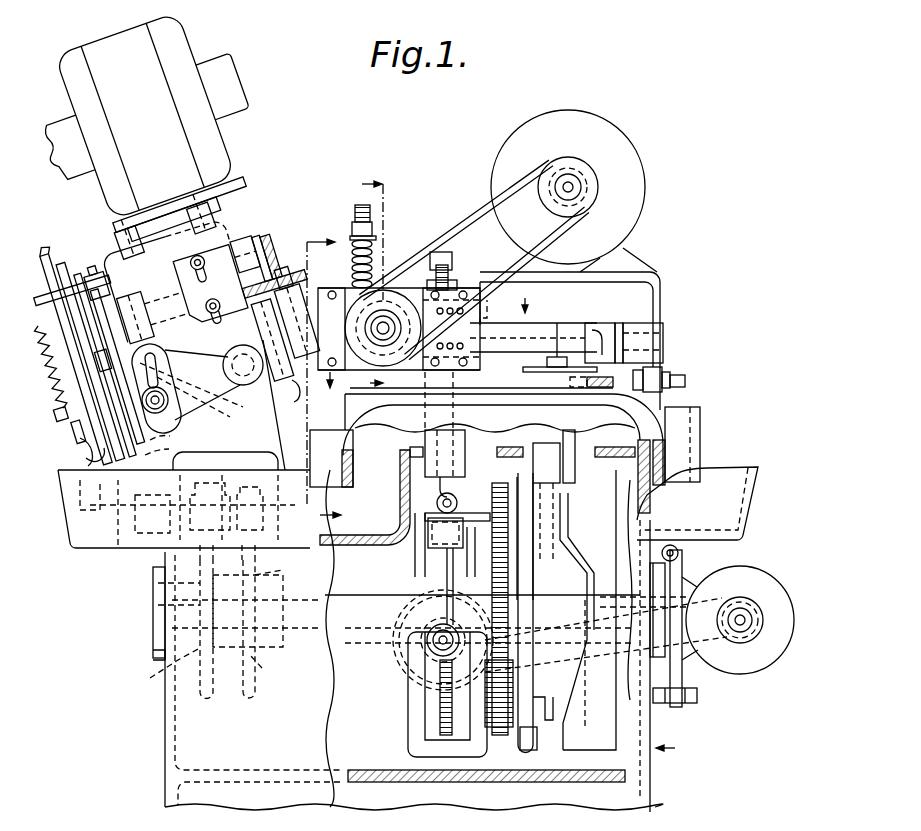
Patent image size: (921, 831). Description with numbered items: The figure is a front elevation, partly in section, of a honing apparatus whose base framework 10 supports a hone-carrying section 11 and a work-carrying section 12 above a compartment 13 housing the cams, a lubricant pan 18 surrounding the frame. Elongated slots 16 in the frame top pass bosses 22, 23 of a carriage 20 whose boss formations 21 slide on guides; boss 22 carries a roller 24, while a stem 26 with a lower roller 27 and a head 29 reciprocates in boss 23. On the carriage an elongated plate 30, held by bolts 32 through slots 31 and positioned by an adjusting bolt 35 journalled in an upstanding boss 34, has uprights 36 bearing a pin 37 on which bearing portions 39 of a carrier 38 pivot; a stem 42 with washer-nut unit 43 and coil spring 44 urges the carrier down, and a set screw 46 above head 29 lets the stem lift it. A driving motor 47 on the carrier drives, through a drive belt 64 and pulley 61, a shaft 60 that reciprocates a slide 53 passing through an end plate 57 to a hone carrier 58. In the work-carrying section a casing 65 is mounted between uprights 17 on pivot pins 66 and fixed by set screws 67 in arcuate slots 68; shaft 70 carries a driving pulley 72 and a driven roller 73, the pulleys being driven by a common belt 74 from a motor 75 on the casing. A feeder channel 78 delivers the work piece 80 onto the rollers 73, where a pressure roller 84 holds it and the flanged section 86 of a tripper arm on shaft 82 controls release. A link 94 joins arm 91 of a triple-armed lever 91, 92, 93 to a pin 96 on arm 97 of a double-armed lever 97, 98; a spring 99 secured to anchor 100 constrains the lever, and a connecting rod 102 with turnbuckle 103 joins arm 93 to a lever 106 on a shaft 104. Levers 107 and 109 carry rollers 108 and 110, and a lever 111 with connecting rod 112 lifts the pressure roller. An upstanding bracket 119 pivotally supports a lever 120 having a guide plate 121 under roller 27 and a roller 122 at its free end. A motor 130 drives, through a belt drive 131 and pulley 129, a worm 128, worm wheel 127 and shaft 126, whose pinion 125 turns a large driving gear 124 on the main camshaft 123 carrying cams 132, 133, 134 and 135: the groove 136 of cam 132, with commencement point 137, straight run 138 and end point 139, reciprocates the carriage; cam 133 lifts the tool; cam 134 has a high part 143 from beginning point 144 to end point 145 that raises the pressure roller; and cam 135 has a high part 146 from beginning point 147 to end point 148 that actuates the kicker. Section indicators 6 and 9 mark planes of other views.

The motor 75 is at (143, 116).
The work-carrying section 12 is at (220, 232).
The shaft 82 is at (138, 270).
The casing 65 is at (179, 294).
The flanged section 86 is at (226, 274).
The pressure roller 84 is at (238, 240).
The channel formation 78 is at (260, 246).
The work piece 80 is at (268, 262).
The tool or hone carrier 58 is at (291, 320).
The driven roller 73 is at (290, 396).
The shaft 70 is at (238, 404).
The common belt 74 is at (58, 248).
The arm 97 is at (74, 316).
The pin 96 is at (90, 334).
The link 94 is at (96, 350).
The spring 99 is at (92, 366).
The arm 98 is at (92, 274).
The anchor 100 is at (44, 284).
The arm 91 is at (56, 382).
The arm 92 is at (60, 414).
The arm 93 is at (74, 428).
The turnbuckle 103 is at (80, 445).
The lever 106 is at (86, 460).
The arcuate slots 68 is at (160, 354).
The set screws 67 is at (167, 406).
The pivot pins 66 is at (232, 375).
The uprights 17 is at (225, 449).
The connecting rod 112 is at (170, 436).
The lever 111 is at (169, 449).
The lubricant pan 18 is at (88, 550).
The shaft 104 is at (120, 549).
The connecting rod 102 is at (102, 495).
The driving pulley 72 is at (143, 512).
The lever 107 is at (216, 498).
The lever 109 is at (258, 498).
The roller 108 is at (213, 552).
The roller 110 is at (261, 553).
The beginning point 144 is at (282, 567).
The high part 143 is at (250, 612).
The beginning point 147 is at (153, 606).
The high part 146 is at (153, 650).
The end point 148 is at (166, 667).
The end point 145 is at (271, 667).
The cam 135 is at (205, 700).
The cam 134 is at (248, 700).
The compartment 13 is at (414, 646).
The main camshaft 123 is at (338, 648).
The pulley 129 is at (395, 648).
The worm 128 is at (402, 670).
The worm wheel 127 is at (447, 694).
The shaft 126 is at (440, 730).
The large driving gear 124 is at (499, 740).
The pinion 125 is at (530, 750).
The roller 122 is at (447, 563).
The lever 120 is at (428, 540).
The guide plate 121 is at (462, 514).
The cam 133 is at (415, 577).
The upstanding bracket 119 is at (465, 582).
The stem 26 is at (454, 495).
The boss 23 is at (465, 438).
The roller or caster 24 is at (533, 468).
The elongated slots 16 is at (566, 443).
The boss 22 is at (548, 438).
The roller or caster 27 is at (402, 500).
The boss formations 21 is at (333, 487).
The carriage 20 is at (660, 414).
The head 29 is at (420, 385).
The carrier 38 is at (660, 281).
The elongated plate 30 is at (576, 338).
The bolts 32 is at (557, 322).
The pin 37 is at (588, 322).
The upright 36 is at (619, 322).
The bearing portions 39 is at (636, 322).
The elongated slots 31 is at (540, 360).
The slide 53 is at (493, 312).
The upstanding boss 34 is at (669, 367).
The adjusting bolt 35 is at (678, 374).
The driving motor 47 is at (642, 178).
The drive belt 64 is at (480, 213).
The pulley 61 is at (383, 290).
The shaft 60 is at (424, 288).
The end plate 57 is at (330, 288).
The hone-carrying section 11 is at (407, 276).
The set screw 46 is at (452, 262).
The stem 42 is at (370, 214).
The washer-nut unit 43 is at (372, 230).
The coil spring 44 is at (372, 256).
The section line 9 is at (364, 283).
The section line 6 is at (333, 371).
The base framework 10 is at (507, 526).
The annular circumferential groove 136 is at (532, 524).
The commencement point 137 is at (564, 545).
The straight run 138 is at (570, 610).
The end point 139 is at (542, 716).
The cam 132 is at (600, 750).
The belt drive 131 is at (718, 600).
The motor 130 is at (778, 585).